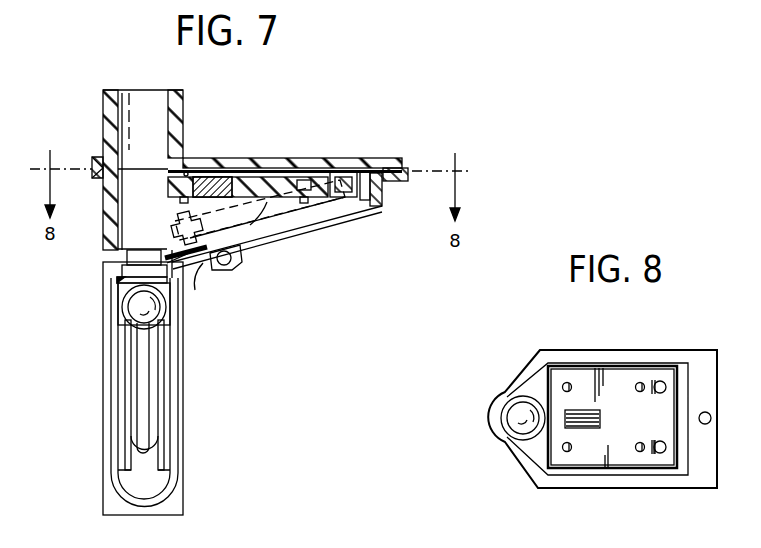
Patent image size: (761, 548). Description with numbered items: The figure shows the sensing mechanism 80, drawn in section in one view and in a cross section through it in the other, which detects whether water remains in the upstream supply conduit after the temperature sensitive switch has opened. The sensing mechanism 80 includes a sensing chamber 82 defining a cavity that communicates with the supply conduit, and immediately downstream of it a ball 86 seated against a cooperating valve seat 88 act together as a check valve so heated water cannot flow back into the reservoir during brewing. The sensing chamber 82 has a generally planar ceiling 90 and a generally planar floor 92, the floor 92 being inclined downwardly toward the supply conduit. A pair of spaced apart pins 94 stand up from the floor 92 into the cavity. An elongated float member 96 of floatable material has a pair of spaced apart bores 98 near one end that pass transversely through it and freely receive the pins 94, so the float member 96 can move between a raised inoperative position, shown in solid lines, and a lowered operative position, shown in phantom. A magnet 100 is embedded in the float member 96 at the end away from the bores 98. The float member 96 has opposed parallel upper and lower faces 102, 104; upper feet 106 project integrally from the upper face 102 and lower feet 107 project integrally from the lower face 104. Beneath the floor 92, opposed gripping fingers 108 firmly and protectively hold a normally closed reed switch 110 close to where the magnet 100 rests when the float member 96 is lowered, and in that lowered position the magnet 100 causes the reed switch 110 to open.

In FIG. 7, the sensing mechanism 80 is at (341, 231).
In FIG. 8, the sensing mechanism 80 is at (602, 419).
In FIG. 7, the sensing chamber 82 is at (298, 178).
In FIG. 7, the ball 86 is at (130, 322).
In FIG. 8, the ball 86 is at (521, 410).
In FIG. 7, the valve seat 88 is at (123, 290).
In FIG. 7, the ceiling 90 is at (378, 166).
In FIG. 7, the floor 92 is at (300, 207).
In FIG. 7, the pins 94 is at (349, 196).
In FIG. 8, the pins 94 is at (661, 441).
In FIG. 7, the float member 96 is at (168, 186).
In FIG. 8, the float member 96 is at (647, 431).
In FIG. 7, the bores 98 is at (333, 176).
In FIG. 8, the bores 98 is at (651, 453).
In FIG. 7, the magnet 100 is at (222, 177).
In FIG. 8, the magnet 100 is at (583, 428).
In FIG. 7, the upper face 102 is at (257, 171).
In FIG. 7, the lower face 104 is at (267, 202).
In FIG. 7, the upper feet 106 is at (186, 171).
In FIG. 8, the upper feet 106 is at (637, 382).
In FIG. 7, the lower feet 107 is at (174, 200).
In FIG. 7, the gripping fingers 108 is at (224, 266).
In FIG. 7, the reed switch 110 is at (203, 263).